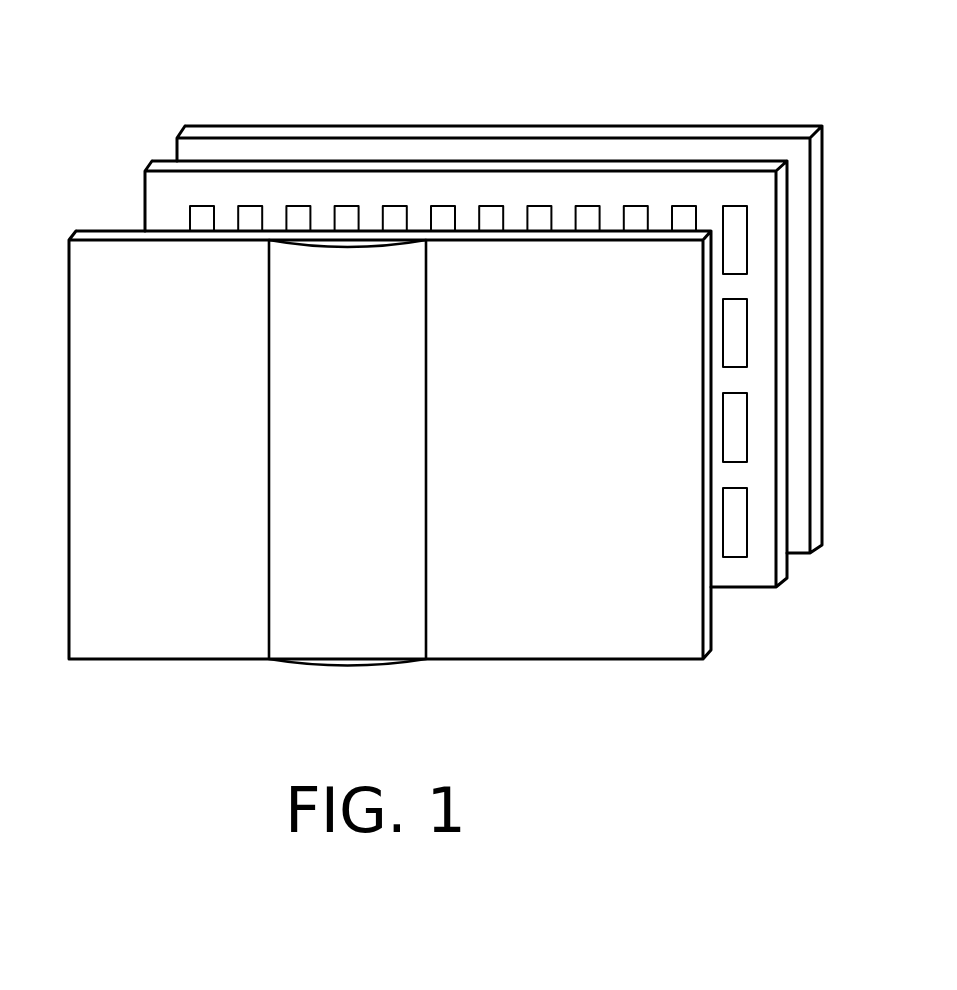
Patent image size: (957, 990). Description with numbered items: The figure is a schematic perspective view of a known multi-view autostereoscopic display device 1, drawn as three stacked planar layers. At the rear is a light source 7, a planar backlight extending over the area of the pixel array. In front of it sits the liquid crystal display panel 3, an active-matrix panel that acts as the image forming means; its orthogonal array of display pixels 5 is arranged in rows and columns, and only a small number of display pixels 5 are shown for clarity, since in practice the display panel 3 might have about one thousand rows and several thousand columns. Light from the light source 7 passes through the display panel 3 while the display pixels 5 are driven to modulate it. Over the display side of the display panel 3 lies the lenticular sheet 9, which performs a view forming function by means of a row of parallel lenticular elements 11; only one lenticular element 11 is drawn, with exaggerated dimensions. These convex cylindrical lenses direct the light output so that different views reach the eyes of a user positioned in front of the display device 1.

The multi-view autostereoscopic display device 1 is at (78, 77).
The liquid crystal display panel 3 is at (787, 582).
The display pixels 5 is at (737, 232).
The light source 7 is at (822, 547).
The lenticular sheet 9 is at (711, 653).
The lenticular elements 11 is at (350, 650).